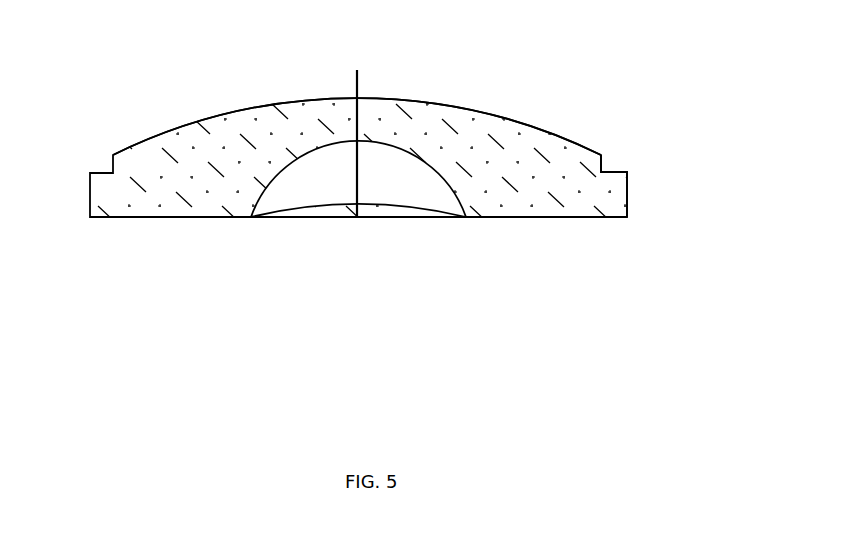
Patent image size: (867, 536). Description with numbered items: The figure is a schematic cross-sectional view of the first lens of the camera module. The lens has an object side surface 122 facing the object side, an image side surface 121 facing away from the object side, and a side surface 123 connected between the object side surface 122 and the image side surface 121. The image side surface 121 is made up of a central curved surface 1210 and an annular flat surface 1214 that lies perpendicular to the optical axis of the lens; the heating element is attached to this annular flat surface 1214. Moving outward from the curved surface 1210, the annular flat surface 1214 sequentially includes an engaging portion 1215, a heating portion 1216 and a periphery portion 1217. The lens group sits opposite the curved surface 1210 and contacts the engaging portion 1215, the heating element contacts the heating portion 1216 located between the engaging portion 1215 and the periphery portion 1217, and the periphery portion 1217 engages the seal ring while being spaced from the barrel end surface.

The image side surface 121 is at (373, 375).
The object side surface 122 is at (417, 98).
The side surface 123 is at (630, 203).
The curved surface 1210 is at (437, 170).
The annular flat surface 1214 is at (208, 327).
The engaging portion 1215 is at (238, 227).
The heating portion 1216 is at (187, 227).
The periphery portion 1217 is at (105, 227).